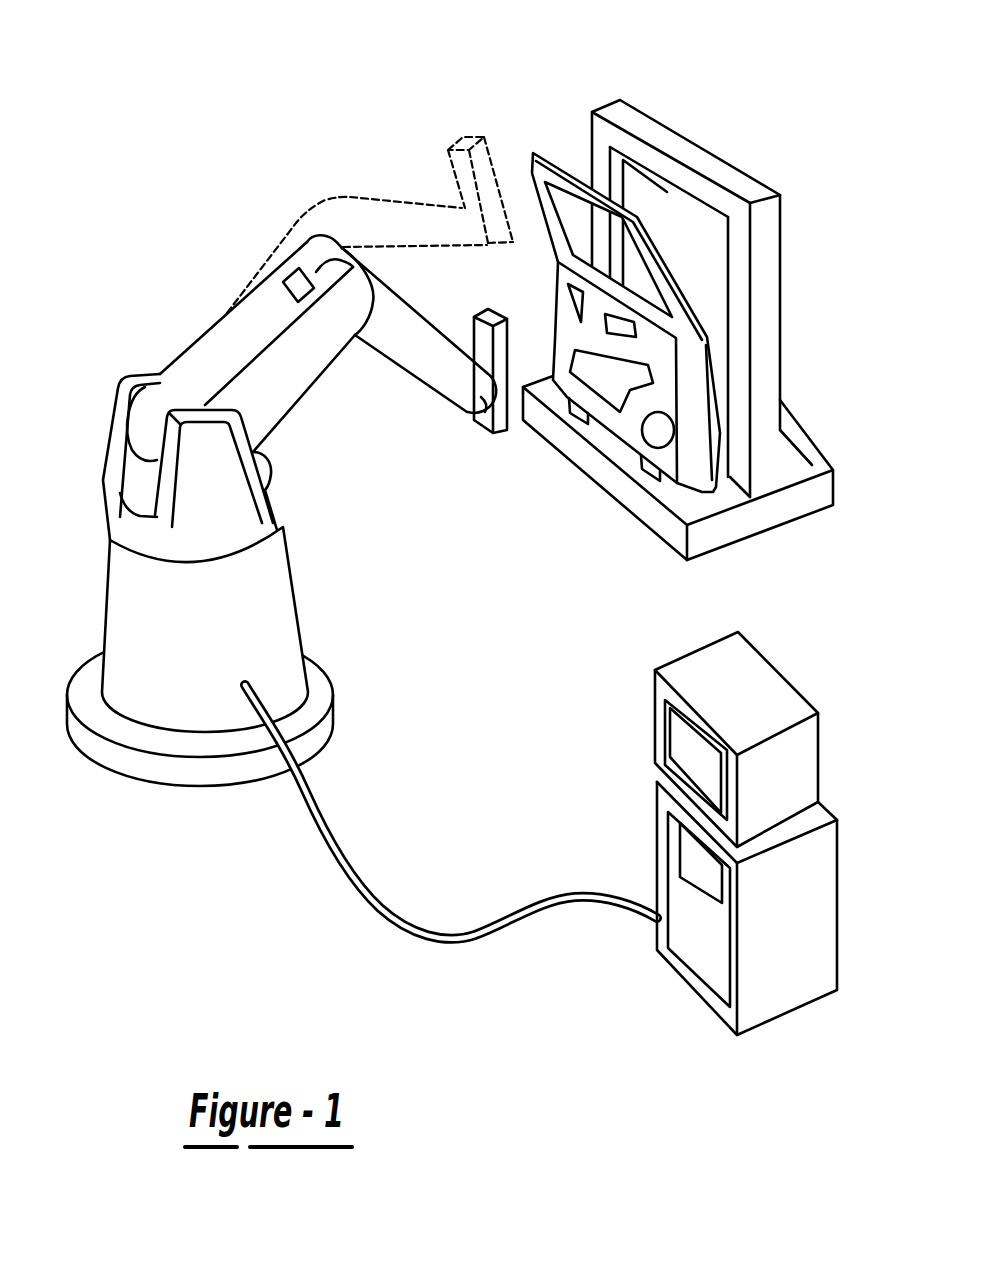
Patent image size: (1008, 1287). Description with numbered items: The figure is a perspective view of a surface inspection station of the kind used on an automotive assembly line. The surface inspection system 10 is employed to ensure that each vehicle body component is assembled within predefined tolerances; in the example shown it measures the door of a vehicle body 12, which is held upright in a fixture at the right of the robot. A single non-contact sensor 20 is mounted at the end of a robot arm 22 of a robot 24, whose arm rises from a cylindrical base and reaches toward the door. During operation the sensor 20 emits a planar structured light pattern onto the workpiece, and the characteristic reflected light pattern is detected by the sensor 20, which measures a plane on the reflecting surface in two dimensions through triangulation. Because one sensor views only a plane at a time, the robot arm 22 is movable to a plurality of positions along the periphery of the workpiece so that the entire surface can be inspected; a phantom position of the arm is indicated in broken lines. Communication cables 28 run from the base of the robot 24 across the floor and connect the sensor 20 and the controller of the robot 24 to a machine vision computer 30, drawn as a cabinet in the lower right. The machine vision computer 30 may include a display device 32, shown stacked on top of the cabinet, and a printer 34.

The surface inspection system 10 is at (196, 218).
The vehicle body 12 is at (553, 170).
The non-contact sensor 20 is at (500, 413).
The robot arm 22 is at (283, 380).
The robot 24 is at (260, 613).
The communication cables 28 is at (325, 827).
The machine vision computer 30 is at (729, 917).
The display device 32 is at (800, 767).
The printer 34 is at (705, 953).